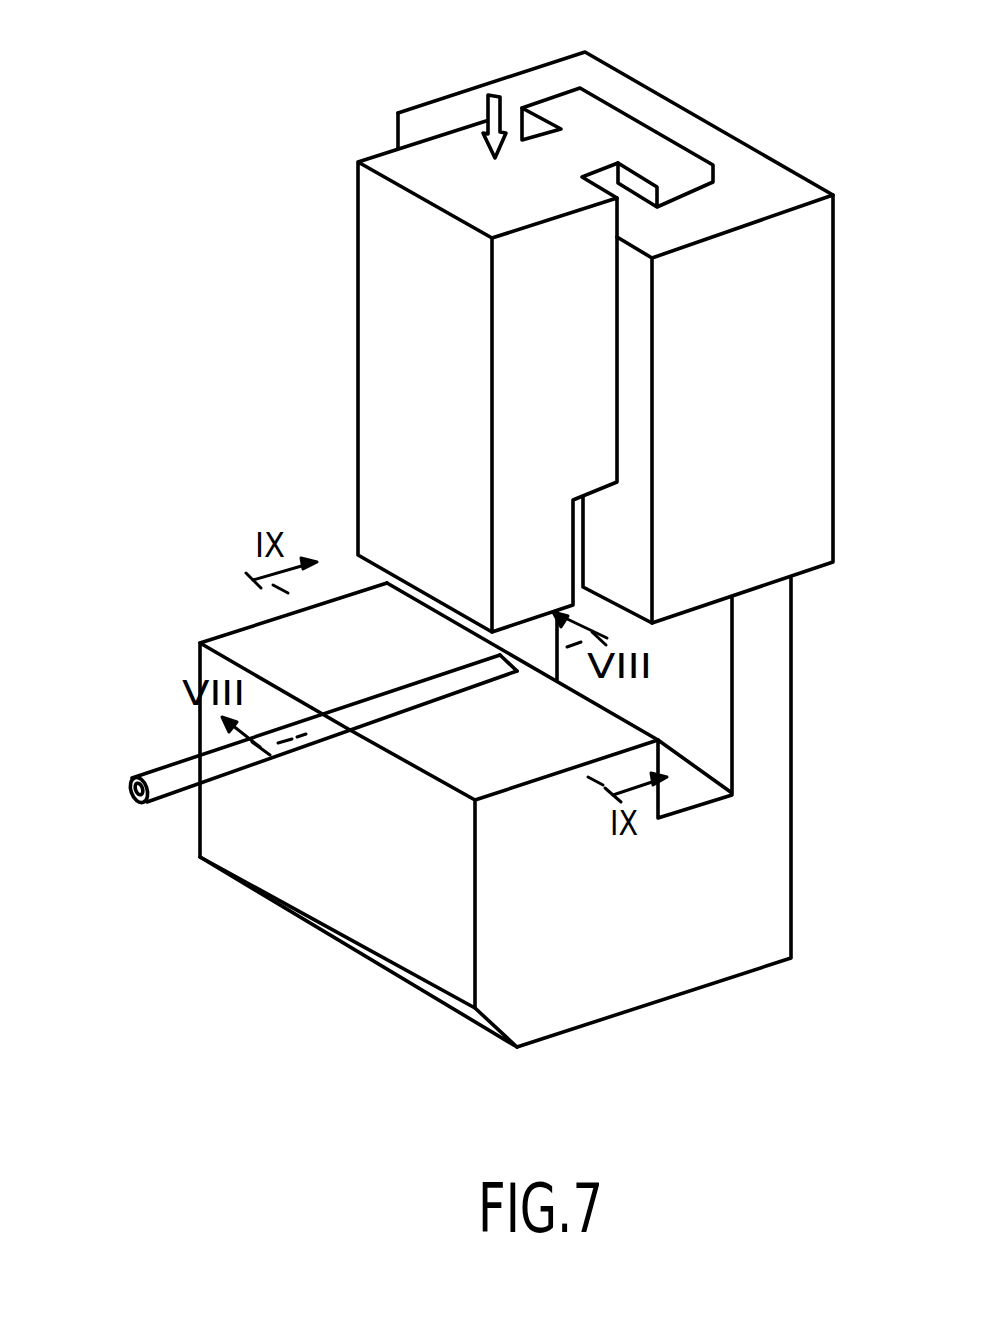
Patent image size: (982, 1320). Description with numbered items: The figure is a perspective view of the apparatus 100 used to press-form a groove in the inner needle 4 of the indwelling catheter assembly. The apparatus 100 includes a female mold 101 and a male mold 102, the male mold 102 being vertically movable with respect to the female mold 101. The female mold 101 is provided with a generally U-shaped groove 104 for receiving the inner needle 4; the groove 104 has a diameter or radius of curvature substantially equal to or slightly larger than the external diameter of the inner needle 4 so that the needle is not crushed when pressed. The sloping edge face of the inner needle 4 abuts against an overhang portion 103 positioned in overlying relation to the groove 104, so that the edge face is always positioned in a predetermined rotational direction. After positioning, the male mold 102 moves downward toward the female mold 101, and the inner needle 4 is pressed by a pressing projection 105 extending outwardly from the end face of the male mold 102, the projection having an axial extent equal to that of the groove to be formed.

The apparatus 100 is at (726, 75).
The female mold 101 is at (372, 912).
The male mold 102 is at (377, 375).
The overhang portion 103 is at (517, 673).
The groove 104 is at (350, 730).
The pressing projection 105 is at (413, 588).
The inner needle 4 is at (180, 762).